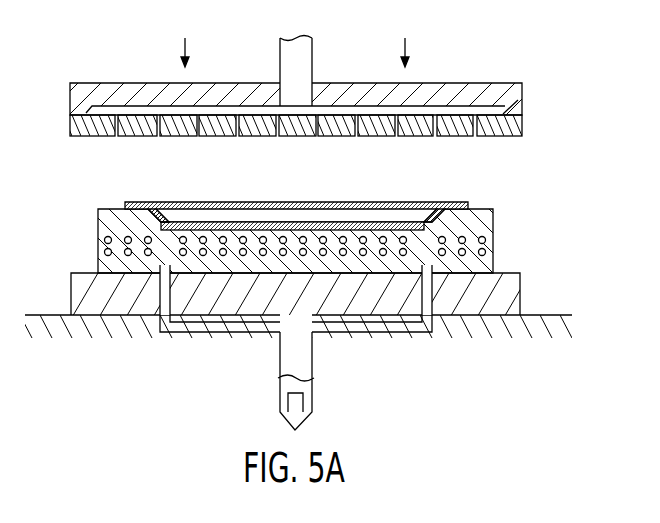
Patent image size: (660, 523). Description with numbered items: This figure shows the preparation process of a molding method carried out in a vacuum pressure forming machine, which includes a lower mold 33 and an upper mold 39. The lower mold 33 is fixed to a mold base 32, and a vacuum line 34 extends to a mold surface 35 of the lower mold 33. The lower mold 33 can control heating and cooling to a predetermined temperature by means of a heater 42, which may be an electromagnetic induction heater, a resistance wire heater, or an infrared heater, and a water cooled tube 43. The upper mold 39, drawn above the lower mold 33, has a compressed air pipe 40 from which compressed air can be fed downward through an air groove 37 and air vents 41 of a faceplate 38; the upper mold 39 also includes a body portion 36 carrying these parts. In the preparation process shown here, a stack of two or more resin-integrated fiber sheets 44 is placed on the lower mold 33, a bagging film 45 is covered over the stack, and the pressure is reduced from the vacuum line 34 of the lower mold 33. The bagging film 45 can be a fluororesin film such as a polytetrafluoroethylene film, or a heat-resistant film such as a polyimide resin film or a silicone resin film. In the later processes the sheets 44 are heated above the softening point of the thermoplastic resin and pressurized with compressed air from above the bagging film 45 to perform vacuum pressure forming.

The mold base 32 is at (503, 305).
The lower mold 33 is at (294, 246).
The vacuum line 34 is at (300, 368).
The mold surface 35 is at (298, 221).
The upper plate body 36 is at (522, 87).
The air groove 37 is at (505, 105).
The faceplate 38 is at (321, 146).
The upper mold 39 is at (346, 117).
The compressed air pipe 40 is at (300, 64).
The air vents 41 is at (238, 138).
The heater 42 is at (102, 240).
The water cooled tube 43 is at (102, 253).
The resin-integrated fiber sheet 44 is at (311, 189).
The bagging film 45 is at (452, 203).